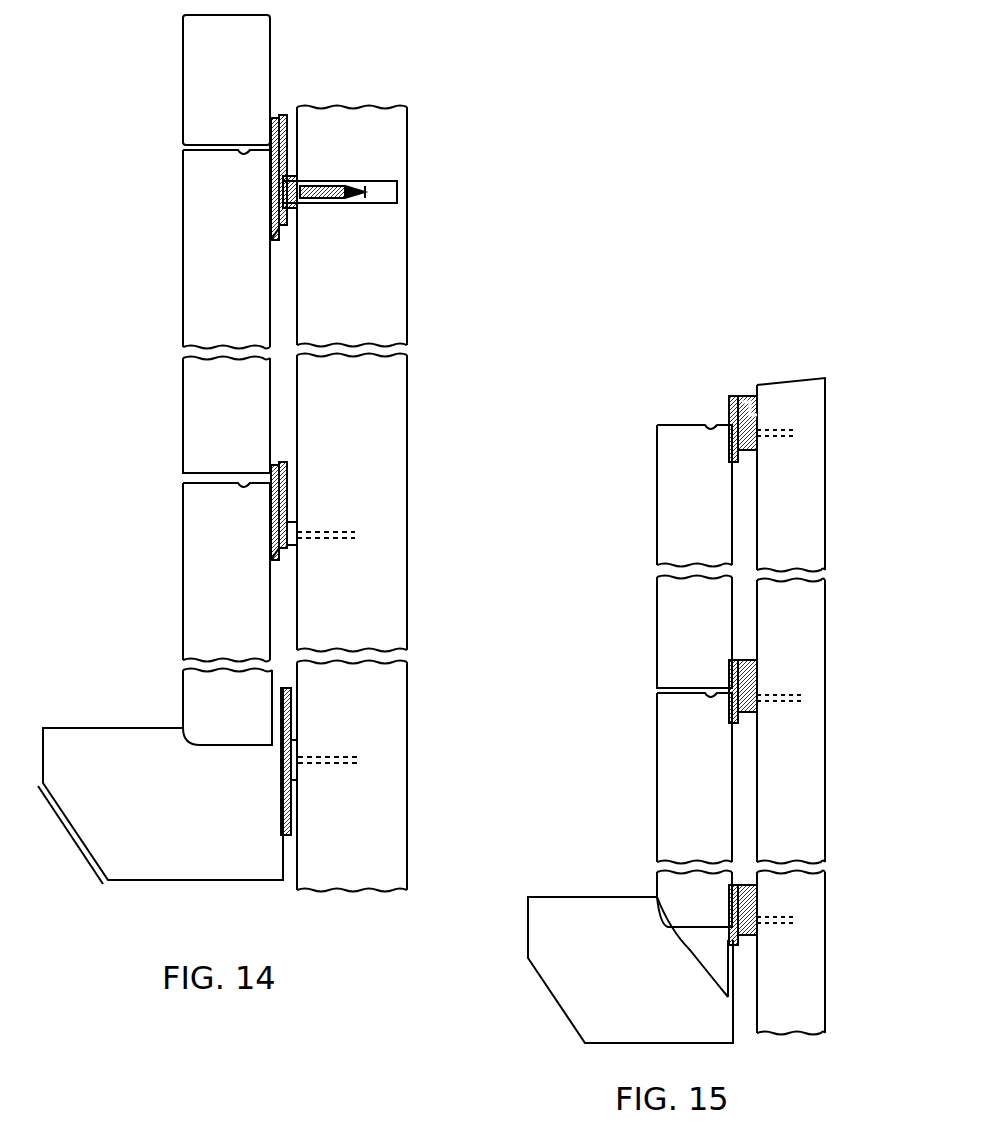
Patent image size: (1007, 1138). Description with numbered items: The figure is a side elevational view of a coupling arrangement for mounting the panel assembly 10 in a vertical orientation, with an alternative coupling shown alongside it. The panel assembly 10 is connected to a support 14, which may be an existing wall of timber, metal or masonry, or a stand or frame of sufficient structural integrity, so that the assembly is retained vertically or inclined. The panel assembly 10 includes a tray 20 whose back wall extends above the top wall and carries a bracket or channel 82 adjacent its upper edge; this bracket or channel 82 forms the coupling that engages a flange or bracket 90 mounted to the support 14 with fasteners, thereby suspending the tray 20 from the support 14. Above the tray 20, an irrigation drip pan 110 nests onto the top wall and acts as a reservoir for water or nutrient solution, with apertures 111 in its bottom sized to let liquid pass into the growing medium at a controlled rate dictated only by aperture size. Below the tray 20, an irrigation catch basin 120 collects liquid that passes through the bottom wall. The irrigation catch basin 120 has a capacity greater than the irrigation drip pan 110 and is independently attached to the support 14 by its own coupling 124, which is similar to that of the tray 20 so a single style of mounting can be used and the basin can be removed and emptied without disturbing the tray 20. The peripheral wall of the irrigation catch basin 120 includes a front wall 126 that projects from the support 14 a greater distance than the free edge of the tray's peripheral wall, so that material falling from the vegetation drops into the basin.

In FIG. 14, the panel assembly 10 is at (171, 380).
In FIG. 15, the panel assembly 10 is at (652, 470).
In FIG. 14, the support 14 is at (400, 499).
In FIG. 15, the support 14 is at (810, 620).
In FIG. 14, the tray 20 is at (398, 553).
In FIG. 14, the bracket or channel 82 is at (273, 468).
In FIG. 14, the flange or bracket 90 is at (300, 716).
In FIG. 14, the irrigation drip pan 110 is at (183, 40).
In FIG. 14, the apertures 111 is at (215, 146).
In FIG. 14, the irrigation catch basin 120 is at (88, 870).
In FIG. 15, the irrigation catch basin 120 is at (560, 1010).
In FIG. 14, the coupling 124 is at (288, 688).
In FIG. 15, the coupling 124 is at (735, 885).
In FIG. 14, the front wall 126 is at (151, 807).
In FIG. 15, the front wall 126 is at (590, 976).